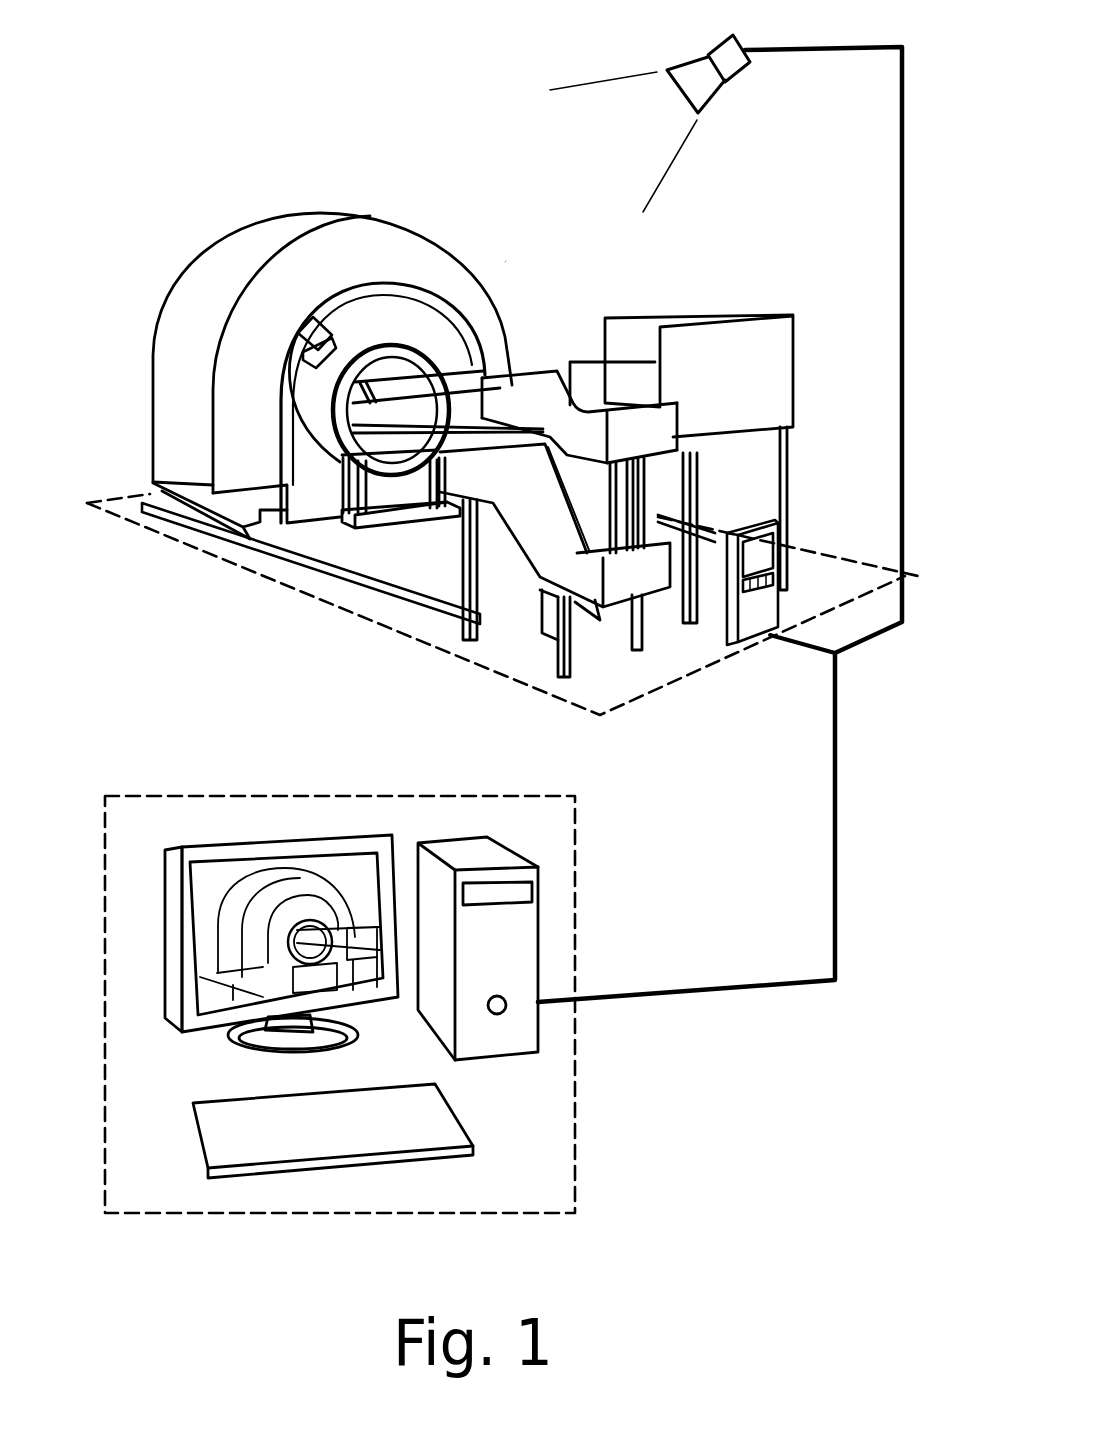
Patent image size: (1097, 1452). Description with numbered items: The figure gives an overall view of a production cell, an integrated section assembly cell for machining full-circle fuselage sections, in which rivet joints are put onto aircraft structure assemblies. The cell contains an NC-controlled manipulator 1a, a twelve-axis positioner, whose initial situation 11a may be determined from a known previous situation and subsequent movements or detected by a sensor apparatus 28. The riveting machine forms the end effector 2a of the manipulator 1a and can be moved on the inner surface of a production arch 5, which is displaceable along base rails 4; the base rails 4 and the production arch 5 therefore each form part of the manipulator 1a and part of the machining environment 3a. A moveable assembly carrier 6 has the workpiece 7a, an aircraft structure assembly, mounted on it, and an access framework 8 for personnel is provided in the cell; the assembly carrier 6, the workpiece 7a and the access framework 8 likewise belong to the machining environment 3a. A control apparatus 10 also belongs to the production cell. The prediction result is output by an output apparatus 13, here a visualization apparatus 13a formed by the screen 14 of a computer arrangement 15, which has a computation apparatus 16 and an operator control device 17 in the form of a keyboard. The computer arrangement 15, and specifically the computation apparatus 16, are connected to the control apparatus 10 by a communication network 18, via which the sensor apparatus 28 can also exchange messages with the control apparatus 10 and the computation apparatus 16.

The manipulator 1a is at (301, 369).
The initial situation 11a is at (301, 369).
The production arch 5 is at (243, 250).
The end effector 2a is at (312, 328).
The machining environment 3a is at (510, 258).
The assembly carrier 6 is at (465, 383).
The workpiece 7a is at (318, 418).
The access framework 8 is at (778, 355).
The control apparatus 10 is at (765, 553).
The base rails 4 is at (363, 590).
The sensor apparatus 28 is at (730, 50).
The communication network 18 is at (830, 721).
The computer arrangement 15 is at (576, 1100).
The output apparatus 13 is at (352, 888).
The visualization apparatus 13a is at (352, 888).
The screen 14 is at (317, 847).
The computation apparatus 16 is at (518, 955).
The operator control device 17 is at (284, 1150).